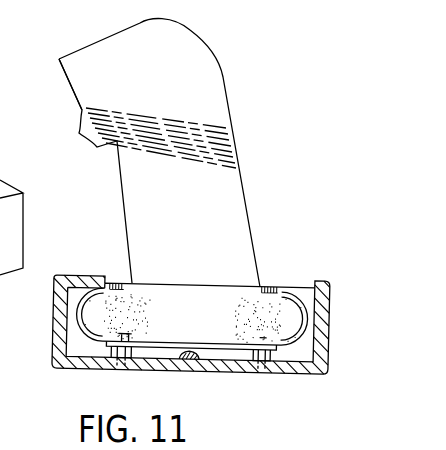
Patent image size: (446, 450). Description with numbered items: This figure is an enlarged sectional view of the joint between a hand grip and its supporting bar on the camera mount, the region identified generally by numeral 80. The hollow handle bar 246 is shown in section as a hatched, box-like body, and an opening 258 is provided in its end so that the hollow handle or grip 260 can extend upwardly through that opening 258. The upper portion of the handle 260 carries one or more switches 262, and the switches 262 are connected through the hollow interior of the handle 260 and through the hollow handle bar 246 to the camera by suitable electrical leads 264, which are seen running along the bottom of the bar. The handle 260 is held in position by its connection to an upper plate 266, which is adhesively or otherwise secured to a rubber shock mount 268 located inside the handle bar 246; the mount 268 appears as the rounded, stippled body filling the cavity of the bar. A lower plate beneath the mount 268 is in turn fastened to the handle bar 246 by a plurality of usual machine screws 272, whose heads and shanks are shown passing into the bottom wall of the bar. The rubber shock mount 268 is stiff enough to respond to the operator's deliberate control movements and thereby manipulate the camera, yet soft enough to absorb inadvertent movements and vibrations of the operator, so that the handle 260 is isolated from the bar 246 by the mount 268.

The nozzle assembly 80 is at (22, 137).
The hollow handle 260 is at (242, 185).
The switch 262 is at (60, 82).
The hollow handle bar 246 is at (318, 368).
The upper plate 266 is at (117, 282).
The opening 258 is at (276, 284).
The rubber shock mount 268 is at (208, 323).
The machine screws 272 is at (118, 364).
The electrical leads 264 is at (197, 360).